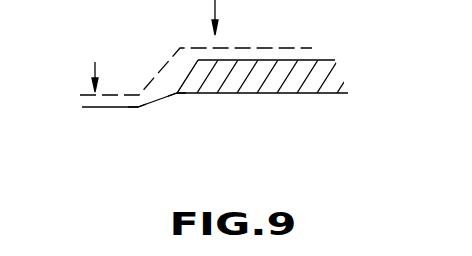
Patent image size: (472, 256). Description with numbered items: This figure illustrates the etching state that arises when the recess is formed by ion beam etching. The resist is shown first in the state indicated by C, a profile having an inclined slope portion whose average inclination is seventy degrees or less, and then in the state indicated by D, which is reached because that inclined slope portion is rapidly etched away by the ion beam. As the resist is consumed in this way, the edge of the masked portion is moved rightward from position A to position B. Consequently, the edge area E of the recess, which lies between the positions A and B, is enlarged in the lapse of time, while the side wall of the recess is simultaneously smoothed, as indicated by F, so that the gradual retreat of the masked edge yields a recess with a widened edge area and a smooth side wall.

The position of masked portion edge A is at (140, 110).
The position of masked portion edge B is at (176, 95).
The initial etching state of resist C is at (247, 47).
The etched state of resist D is at (313, 61).
The edge area of recess E is at (92, 107).
The side wall of recess F is at (165, 100).